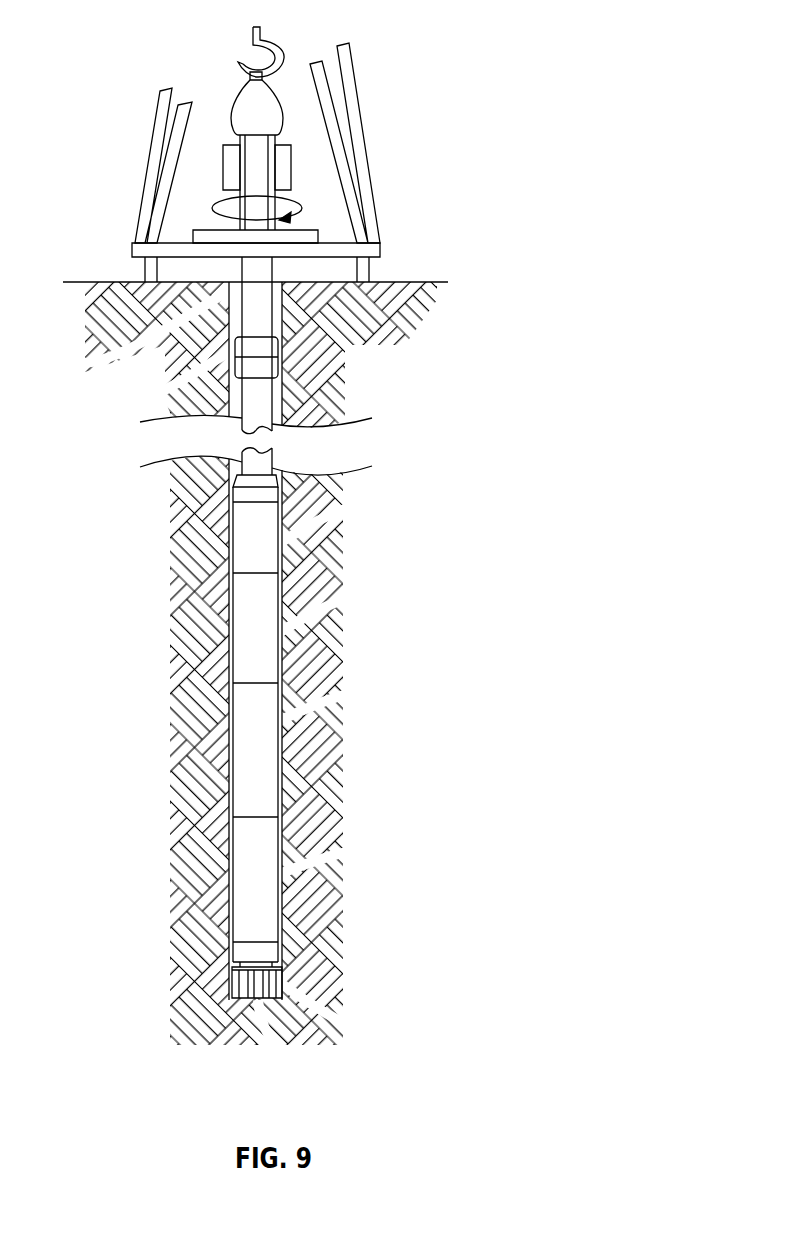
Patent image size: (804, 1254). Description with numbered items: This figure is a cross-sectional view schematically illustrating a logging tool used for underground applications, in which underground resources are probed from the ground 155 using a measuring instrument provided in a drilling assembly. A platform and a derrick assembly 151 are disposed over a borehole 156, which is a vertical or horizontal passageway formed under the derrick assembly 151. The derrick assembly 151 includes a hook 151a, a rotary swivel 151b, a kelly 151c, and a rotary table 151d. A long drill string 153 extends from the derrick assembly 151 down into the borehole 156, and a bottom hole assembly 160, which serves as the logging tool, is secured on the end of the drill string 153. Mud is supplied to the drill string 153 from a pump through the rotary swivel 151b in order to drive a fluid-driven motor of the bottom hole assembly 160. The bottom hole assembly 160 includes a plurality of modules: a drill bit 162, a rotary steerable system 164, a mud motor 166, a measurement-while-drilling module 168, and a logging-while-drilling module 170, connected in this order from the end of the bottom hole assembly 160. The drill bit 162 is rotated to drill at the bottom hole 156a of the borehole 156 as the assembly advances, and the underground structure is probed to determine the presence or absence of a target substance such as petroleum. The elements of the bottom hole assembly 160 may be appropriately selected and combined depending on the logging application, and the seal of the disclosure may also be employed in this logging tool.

The derrick assembly 151 is at (283, 141).
The hook 151a is at (253, 34).
The rotary swivel 151b is at (253, 98).
The kelly 151c is at (253, 182).
The rotary table 151d is at (212, 234).
The drill string 153 is at (263, 270).
The ground 155 is at (410, 282).
The borehole 156 is at (283, 322).
The bottom hole 156a is at (318, 1039).
The bottom hole assembly 160 is at (213, 763).
The drill bit 162 is at (275, 979).
The rotary steerable system 164 is at (257, 882).
The mud motor 166 is at (257, 732).
The measurement-while-drilling module 168 is at (260, 645).
The logging-while-drilling module 170 is at (262, 556).